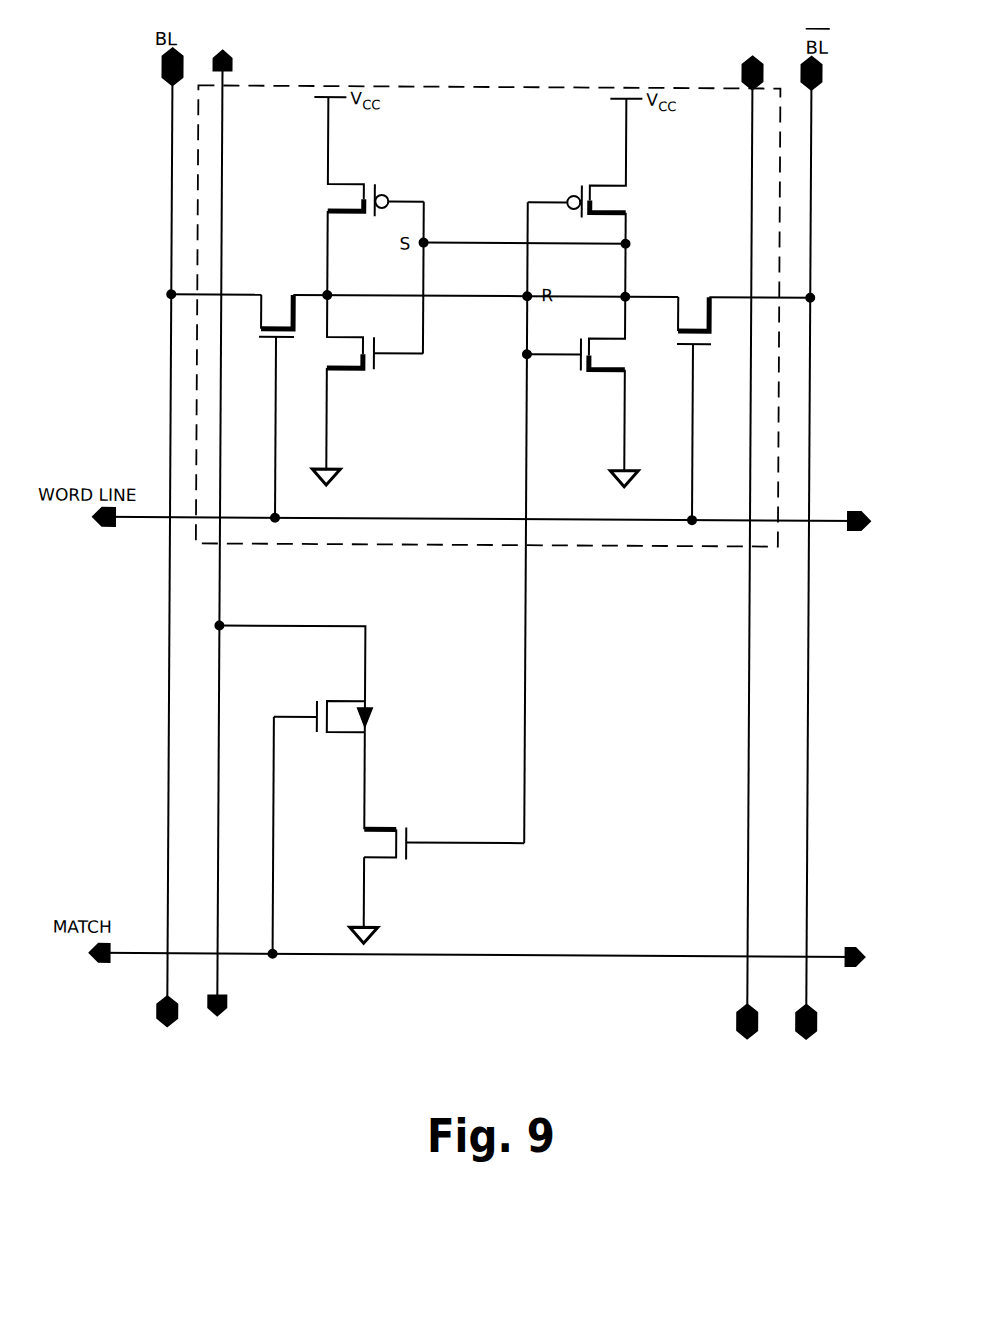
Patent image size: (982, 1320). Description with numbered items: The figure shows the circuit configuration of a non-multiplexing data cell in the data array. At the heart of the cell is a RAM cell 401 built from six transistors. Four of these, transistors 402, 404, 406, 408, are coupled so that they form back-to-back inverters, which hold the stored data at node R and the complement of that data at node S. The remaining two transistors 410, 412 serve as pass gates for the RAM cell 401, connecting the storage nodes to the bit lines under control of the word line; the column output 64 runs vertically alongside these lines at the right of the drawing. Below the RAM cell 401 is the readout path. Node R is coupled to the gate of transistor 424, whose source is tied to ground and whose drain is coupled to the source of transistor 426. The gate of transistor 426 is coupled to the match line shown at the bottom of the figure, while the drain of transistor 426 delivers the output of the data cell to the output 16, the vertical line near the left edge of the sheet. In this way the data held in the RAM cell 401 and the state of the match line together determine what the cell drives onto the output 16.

The output 16 is at (254, 522).
The column output 64 is at (689, 532).
The RAM cell 401 is at (495, 100).
The transistor 402 is at (358, 196).
The transistor 404 is at (594, 197).
The transistor 406 is at (360, 382).
The transistor 408 is at (593, 383).
The transistor 410 is at (276, 393).
The transistor 412 is at (693, 399).
The transistor 424 is at (423, 877).
The transistor 426 is at (342, 717).